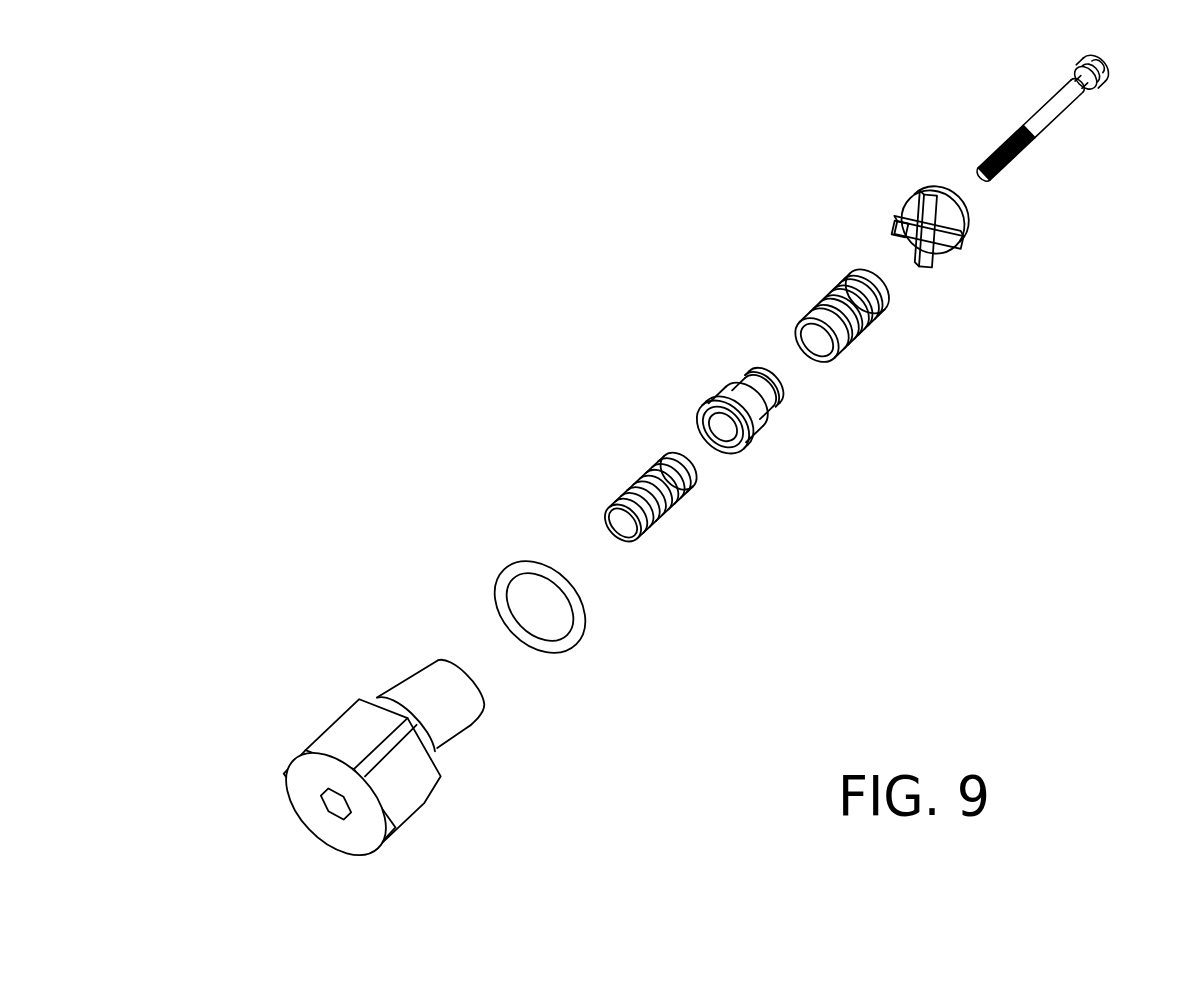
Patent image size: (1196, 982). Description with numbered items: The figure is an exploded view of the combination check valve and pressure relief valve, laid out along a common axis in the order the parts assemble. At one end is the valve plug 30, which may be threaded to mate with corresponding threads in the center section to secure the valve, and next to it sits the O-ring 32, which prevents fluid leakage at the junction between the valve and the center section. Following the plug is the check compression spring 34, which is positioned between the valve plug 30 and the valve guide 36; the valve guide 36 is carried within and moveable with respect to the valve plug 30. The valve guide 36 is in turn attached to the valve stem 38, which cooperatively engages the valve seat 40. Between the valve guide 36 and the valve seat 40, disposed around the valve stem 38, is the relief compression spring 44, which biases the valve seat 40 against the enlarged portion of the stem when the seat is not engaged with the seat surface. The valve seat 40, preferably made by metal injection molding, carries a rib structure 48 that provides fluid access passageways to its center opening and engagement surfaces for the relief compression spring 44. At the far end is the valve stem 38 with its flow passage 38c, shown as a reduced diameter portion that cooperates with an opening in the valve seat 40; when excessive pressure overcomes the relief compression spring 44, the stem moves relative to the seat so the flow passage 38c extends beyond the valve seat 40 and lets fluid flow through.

The valve plug 30 is at (300, 800).
The O-ring 32 is at (495, 571).
The check compression spring 34 is at (625, 491).
The valve guide 36 is at (722, 393).
The relief compression spring 44 is at (823, 295).
The valve seat 40 is at (967, 240).
The rib structure 48 is at (893, 229).
The valve stem 38 is at (1050, 105).
The flow passage 38c is at (1091, 73).